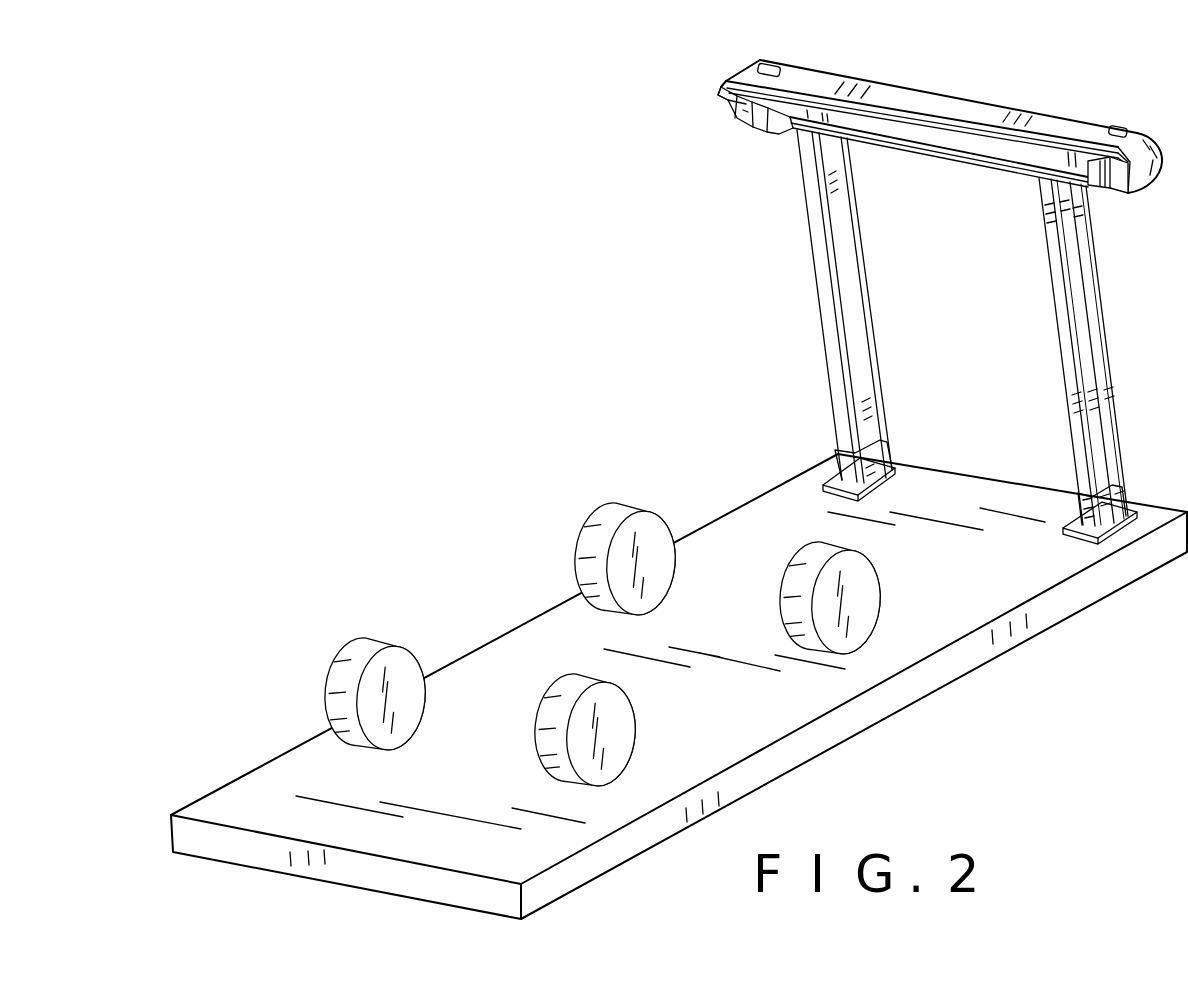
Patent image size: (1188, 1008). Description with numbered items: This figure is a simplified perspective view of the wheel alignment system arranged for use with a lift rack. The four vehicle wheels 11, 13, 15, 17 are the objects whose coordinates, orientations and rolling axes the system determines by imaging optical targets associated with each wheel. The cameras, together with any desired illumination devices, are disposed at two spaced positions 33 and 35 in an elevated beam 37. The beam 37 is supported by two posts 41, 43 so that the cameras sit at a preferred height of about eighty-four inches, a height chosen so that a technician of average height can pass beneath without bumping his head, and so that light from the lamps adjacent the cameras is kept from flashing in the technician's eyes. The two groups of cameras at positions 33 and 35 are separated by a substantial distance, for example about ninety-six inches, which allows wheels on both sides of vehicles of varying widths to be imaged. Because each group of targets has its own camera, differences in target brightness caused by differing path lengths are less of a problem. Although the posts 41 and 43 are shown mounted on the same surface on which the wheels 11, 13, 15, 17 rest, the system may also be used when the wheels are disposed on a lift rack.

The vehicle wheel 11 is at (615, 511).
The vehicle wheel 13 is at (356, 656).
The vehicle wheel 15 is at (538, 741).
The vehicle wheel 17 is at (790, 603).
The spaced position 33 is at (765, 144).
The spaced position 35 is at (1115, 205).
The elevated beam 37 is at (935, 92).
The post 41 is at (825, 347).
The post 43 is at (1102, 332).